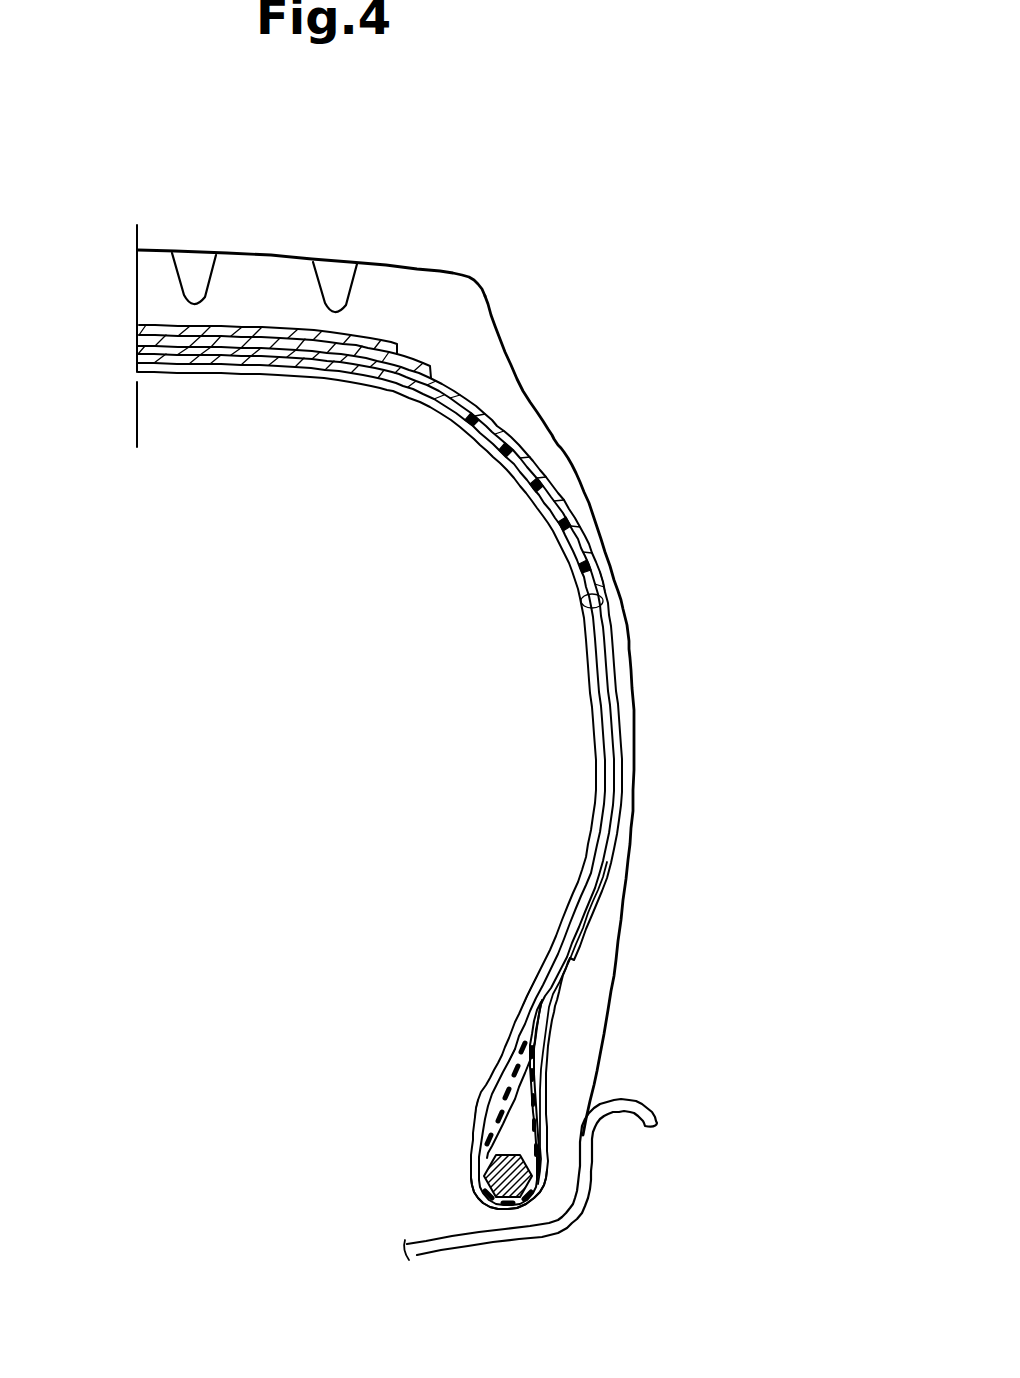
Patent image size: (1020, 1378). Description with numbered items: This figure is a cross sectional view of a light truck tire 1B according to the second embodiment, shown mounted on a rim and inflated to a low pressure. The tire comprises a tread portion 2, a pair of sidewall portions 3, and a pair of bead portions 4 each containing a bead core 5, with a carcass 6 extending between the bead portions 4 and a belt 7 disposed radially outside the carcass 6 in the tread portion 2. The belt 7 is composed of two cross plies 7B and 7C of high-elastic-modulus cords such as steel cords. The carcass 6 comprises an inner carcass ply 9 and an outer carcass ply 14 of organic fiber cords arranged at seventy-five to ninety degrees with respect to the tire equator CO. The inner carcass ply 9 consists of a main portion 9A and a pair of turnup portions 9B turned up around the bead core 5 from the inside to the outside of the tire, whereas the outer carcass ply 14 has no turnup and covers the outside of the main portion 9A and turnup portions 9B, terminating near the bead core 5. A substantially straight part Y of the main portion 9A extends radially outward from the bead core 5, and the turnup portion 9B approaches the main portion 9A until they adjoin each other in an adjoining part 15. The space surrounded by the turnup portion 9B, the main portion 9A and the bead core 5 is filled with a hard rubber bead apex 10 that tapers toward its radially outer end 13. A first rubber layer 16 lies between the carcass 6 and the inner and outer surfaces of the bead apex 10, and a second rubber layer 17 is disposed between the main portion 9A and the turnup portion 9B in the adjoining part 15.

The light truck tire 1B is at (482, 222).
The tread portion 2 is at (262, 267).
The sidewall portion 3 is at (665, 712).
The bead portion 4 is at (417, 1151).
The bead core 5 is at (509, 1184).
The carcass 6 is at (777, 515).
The belt 7 is at (291, 423).
The cross ply 7B is at (273, 348).
The cross ply 7C is at (214, 338).
The inner carcass ply 9 is at (600, 612).
The carcass ply main portion 9A is at (608, 706).
The carcass ply turnup portion 9B is at (556, 1008).
The bead apex 10 is at (512, 1137).
The radially outer end 13 is at (548, 1072).
The outer carcass ply 14 is at (592, 553).
The adjoining part 15 is at (541, 956).
The first rubber layer 16 is at (500, 1138).
The second rubber layer 17 is at (536, 1040).
The tire equator CO is at (135, 413).
The straight part Y is at (444, 1160).